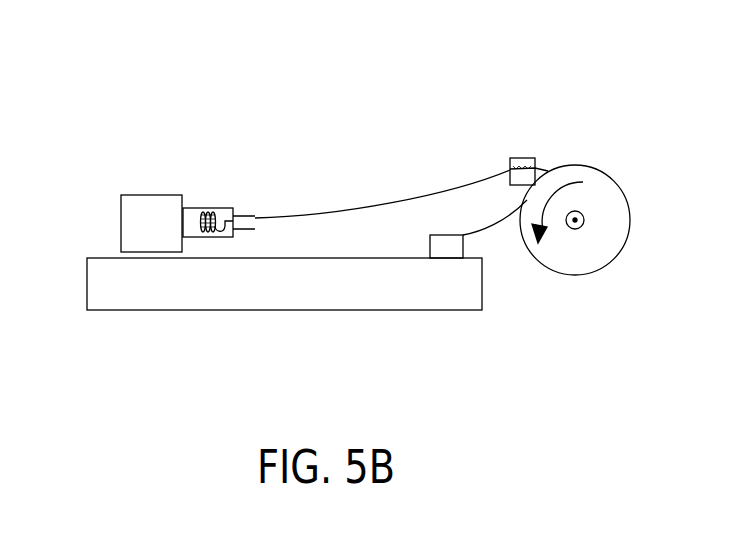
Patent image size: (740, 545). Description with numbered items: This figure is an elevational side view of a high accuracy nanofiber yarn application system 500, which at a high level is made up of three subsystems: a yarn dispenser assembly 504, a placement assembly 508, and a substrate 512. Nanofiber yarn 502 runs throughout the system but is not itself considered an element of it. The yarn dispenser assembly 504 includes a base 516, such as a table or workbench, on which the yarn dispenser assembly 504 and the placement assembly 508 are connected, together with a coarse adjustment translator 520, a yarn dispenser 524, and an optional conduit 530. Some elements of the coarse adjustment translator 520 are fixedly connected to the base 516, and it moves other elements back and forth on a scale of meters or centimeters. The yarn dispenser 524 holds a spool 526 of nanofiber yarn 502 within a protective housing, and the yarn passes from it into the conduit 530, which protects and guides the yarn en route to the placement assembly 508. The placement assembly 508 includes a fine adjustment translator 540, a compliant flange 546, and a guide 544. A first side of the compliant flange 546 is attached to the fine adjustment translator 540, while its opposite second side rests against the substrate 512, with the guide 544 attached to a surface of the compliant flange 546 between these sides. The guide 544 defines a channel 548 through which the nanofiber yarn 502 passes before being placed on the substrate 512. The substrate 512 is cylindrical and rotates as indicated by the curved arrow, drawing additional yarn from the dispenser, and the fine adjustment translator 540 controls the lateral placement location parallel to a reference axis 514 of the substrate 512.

The nanofiber yarn application system 500 is at (245, 325).
The nanofiber yarn 502 is at (397, 203).
The yarn dispenser assembly 504 is at (279, 98).
The placement assembly 508 is at (527, 77).
The substrate 512 is at (602, 177).
The reference axis 514 is at (586, 227).
The base 516 is at (482, 289).
The coarse adjustment translator 520 is at (121, 228).
The yarn dispenser 524 is at (215, 208).
The spool 526 is at (204, 208).
The conduit 530 is at (245, 216).
The fine adjustment translator 540 is at (430, 248).
The guide 544 is at (521, 158).
The compliant flange 546 is at (493, 227).
The channel 548 is at (499, 161).